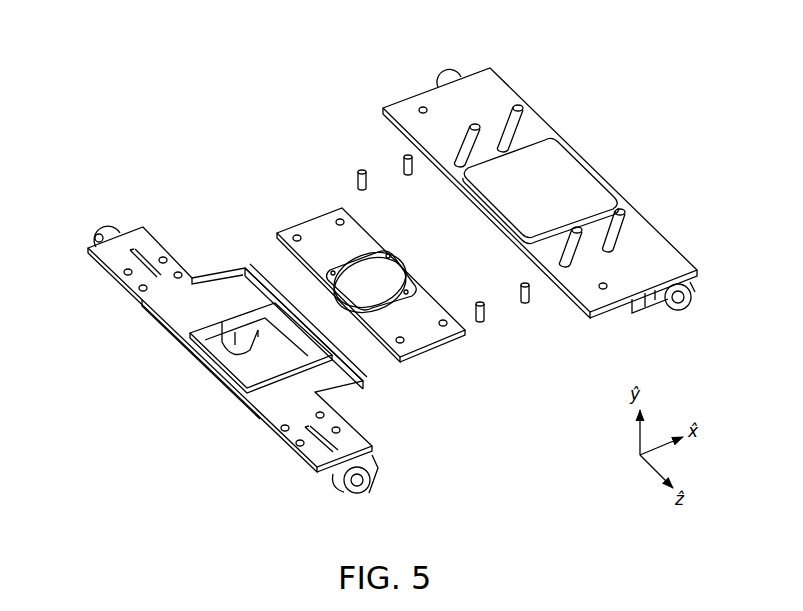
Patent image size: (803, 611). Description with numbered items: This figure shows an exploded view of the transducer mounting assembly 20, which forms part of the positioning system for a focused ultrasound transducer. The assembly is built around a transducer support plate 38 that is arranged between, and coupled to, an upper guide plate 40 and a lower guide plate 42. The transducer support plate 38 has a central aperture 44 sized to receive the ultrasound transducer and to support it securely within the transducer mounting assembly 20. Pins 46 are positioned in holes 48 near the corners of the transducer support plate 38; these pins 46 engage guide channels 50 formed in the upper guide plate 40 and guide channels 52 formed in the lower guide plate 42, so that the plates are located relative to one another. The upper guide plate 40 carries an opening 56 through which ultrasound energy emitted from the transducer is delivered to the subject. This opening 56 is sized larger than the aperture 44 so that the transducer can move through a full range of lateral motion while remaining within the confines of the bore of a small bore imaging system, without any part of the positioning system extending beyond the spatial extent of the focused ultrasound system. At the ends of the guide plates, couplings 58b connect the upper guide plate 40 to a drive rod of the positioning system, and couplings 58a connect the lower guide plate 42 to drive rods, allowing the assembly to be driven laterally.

The transducer mounting assembly 20 is at (173, 100).
The transducer support plate 38 is at (323, 190).
The upper guide plate 40 is at (546, 100).
The lower guide plate 42 is at (152, 320).
The aperture 44 is at (402, 268).
The pins 46 is at (405, 157).
The holes 48 is at (336, 218).
The guide channels 50 is at (475, 125).
The guide channels 52 is at (243, 265).
The opening 56 is at (587, 162).
The couplings 58a is at (94, 232).
The couplings 58b is at (447, 70).